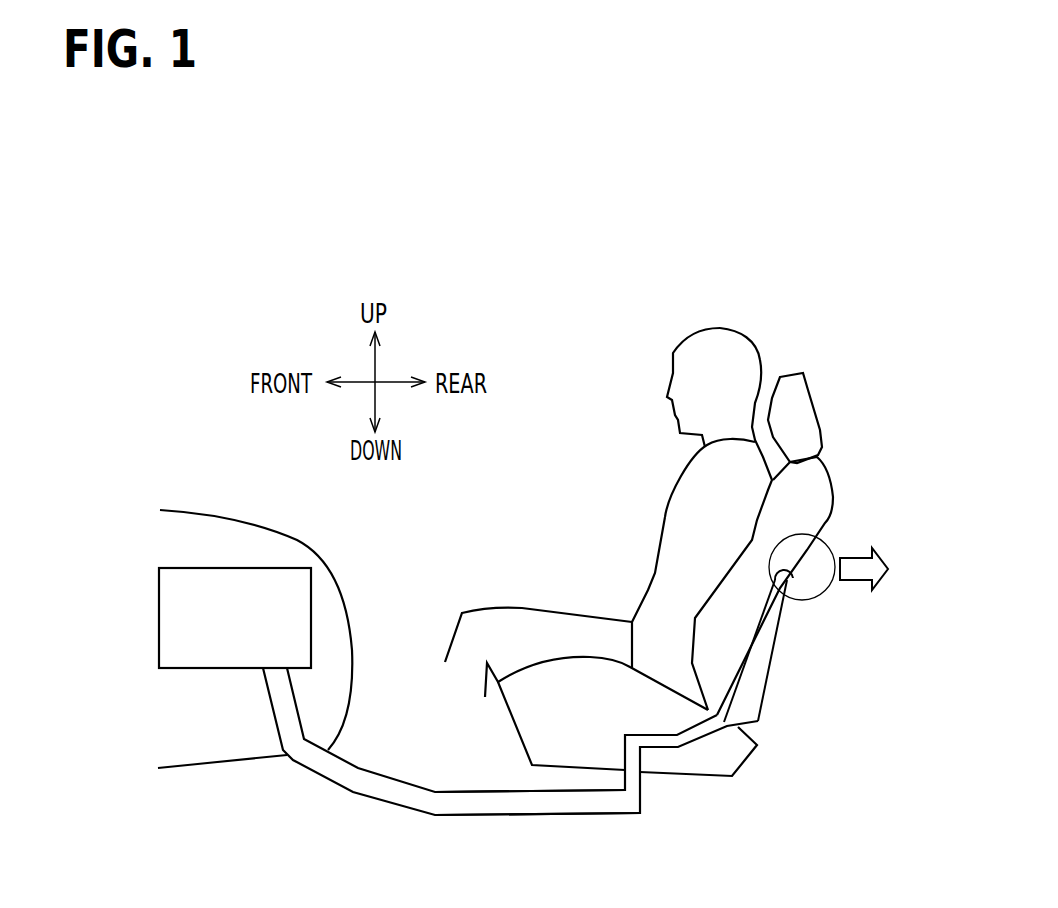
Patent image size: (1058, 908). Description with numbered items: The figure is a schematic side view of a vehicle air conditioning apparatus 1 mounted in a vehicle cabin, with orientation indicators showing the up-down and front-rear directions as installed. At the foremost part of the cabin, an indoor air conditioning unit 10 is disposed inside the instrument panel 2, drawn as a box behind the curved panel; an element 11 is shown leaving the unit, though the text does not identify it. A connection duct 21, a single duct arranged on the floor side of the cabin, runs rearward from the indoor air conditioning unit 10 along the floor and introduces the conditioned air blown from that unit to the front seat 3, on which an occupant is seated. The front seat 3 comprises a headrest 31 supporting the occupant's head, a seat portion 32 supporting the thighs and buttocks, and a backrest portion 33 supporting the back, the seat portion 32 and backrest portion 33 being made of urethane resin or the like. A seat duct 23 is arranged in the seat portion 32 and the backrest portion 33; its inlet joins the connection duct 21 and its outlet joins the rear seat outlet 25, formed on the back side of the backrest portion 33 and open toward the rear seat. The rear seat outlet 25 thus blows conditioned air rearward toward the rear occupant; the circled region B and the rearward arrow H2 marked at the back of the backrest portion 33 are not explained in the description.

The air conditioning apparatus 1 is at (350, 802).
The instrument panel 2 is at (253, 518).
The front seat 3 is at (704, 611).
The indoor air conditioning unit 10 is at (194, 603).
The wire harness 11 is at (273, 668).
The connection duct 21 is at (478, 815).
The seat duct 23 is at (755, 647).
The rear seat outlet 25 is at (767, 580).
The headrest 31 is at (813, 408).
The seat portion 32 is at (713, 778).
The backrest portion 33 is at (831, 513).
The enlarged region B is at (826, 545).
The rearward load direction H2 is at (885, 569).